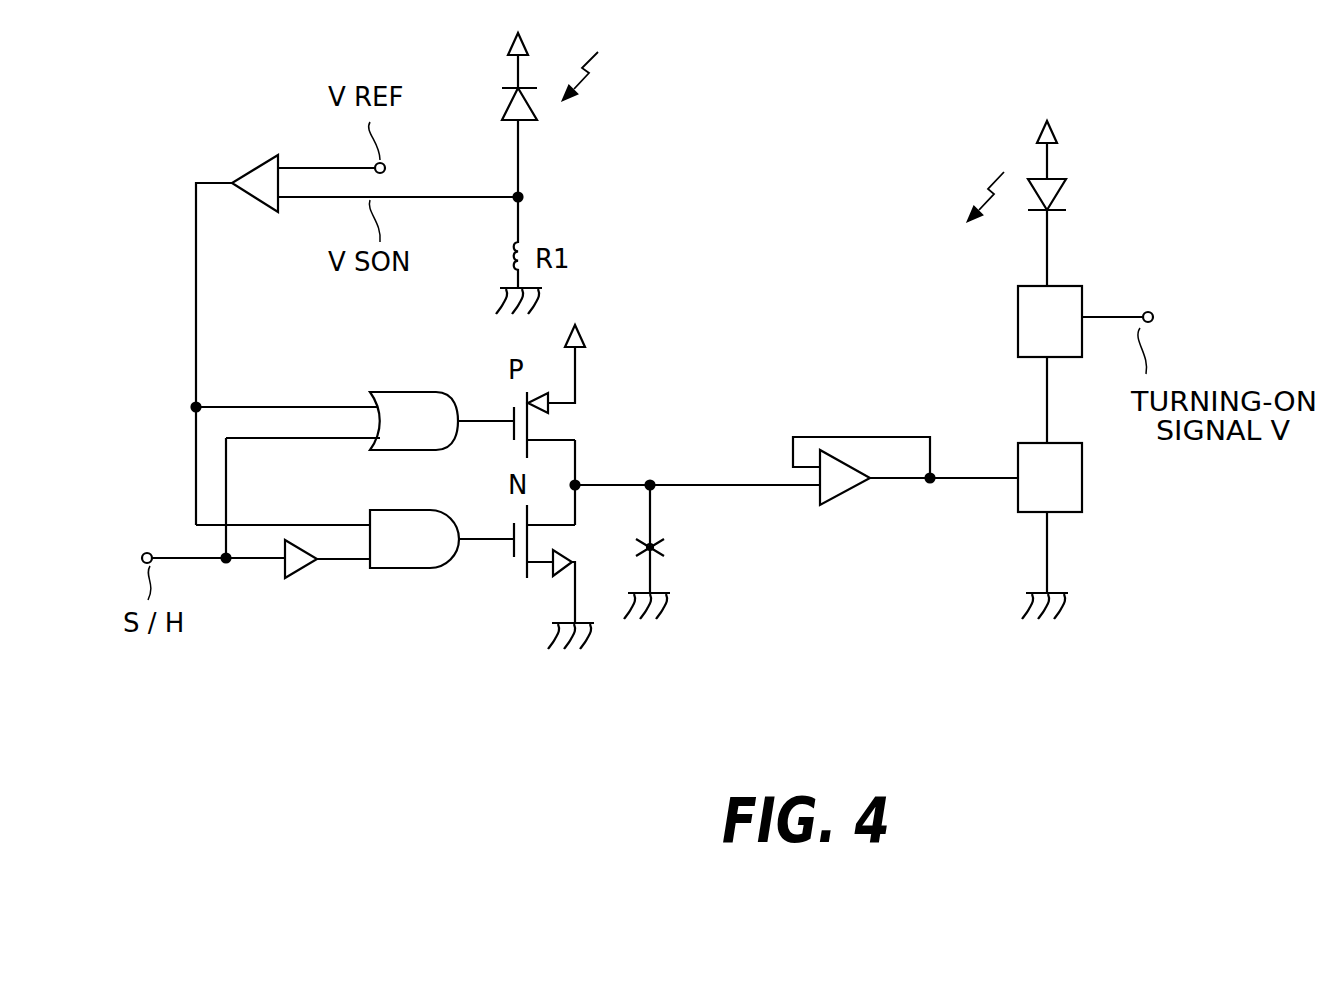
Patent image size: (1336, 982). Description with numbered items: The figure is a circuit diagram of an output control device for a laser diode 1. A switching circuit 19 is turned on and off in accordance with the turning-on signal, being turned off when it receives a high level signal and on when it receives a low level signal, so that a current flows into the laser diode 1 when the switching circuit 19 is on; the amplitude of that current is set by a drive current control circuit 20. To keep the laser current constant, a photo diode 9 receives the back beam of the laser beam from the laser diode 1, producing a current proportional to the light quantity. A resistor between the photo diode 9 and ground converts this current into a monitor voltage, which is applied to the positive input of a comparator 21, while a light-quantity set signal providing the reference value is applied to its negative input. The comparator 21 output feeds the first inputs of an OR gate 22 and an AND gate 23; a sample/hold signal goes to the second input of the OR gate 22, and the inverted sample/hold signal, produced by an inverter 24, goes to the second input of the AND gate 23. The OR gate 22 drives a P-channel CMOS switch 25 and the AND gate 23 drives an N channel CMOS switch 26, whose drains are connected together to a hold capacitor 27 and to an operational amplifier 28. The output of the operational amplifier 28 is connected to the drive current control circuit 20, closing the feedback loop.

The laser diode 1 is at (1060, 186).
The photo diode 9 is at (537, 110).
The switching circuit 19 is at (1082, 302).
The drive current control circuit 20 is at (1082, 484).
The comparator 21 is at (243, 200).
The OR gate 22 is at (424, 392).
The AND gate 23 is at (408, 570).
The inverter 24 is at (300, 573).
The P-channel CMOS switch 25 is at (557, 427).
The N channel CMOS switch 26 is at (545, 578).
The hold capacitor 27 is at (668, 550).
The operational amplifier 28 is at (845, 495).